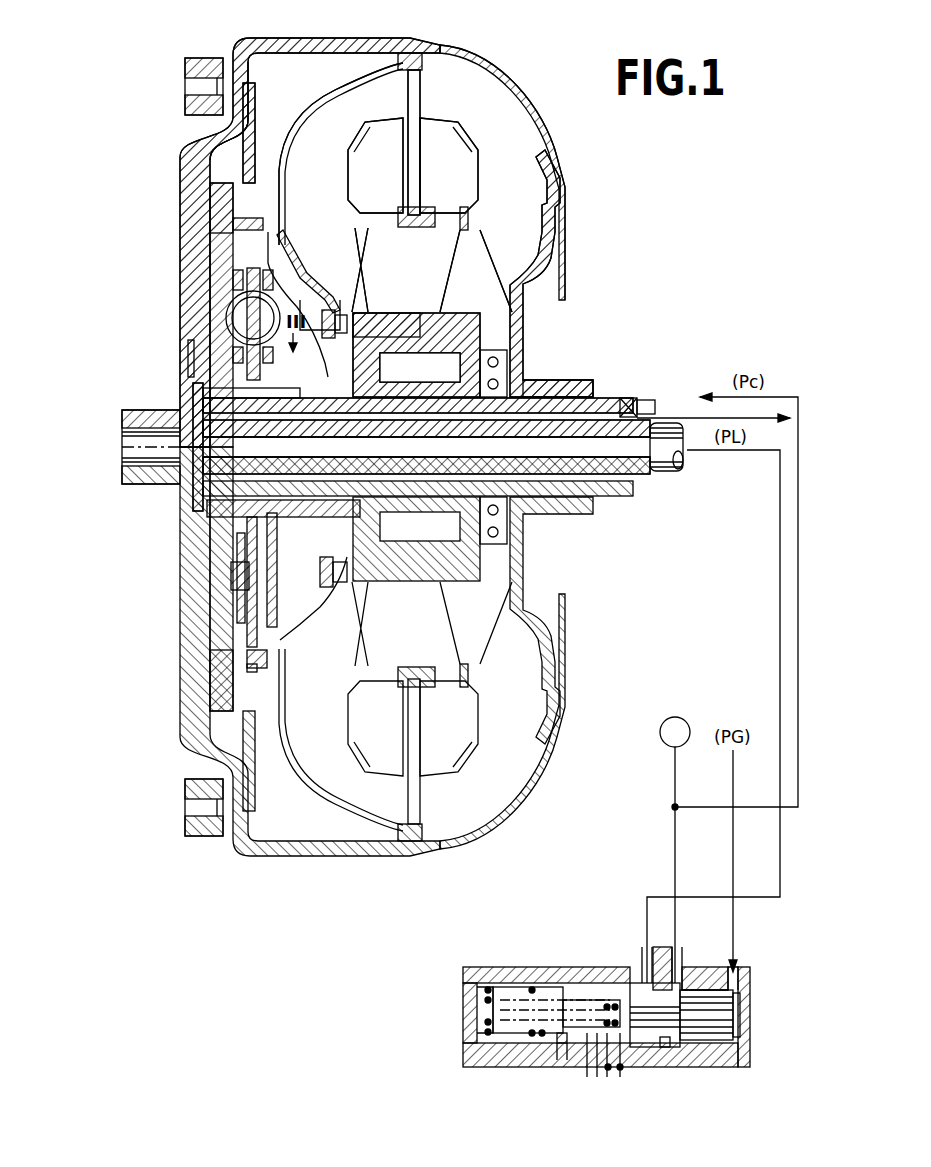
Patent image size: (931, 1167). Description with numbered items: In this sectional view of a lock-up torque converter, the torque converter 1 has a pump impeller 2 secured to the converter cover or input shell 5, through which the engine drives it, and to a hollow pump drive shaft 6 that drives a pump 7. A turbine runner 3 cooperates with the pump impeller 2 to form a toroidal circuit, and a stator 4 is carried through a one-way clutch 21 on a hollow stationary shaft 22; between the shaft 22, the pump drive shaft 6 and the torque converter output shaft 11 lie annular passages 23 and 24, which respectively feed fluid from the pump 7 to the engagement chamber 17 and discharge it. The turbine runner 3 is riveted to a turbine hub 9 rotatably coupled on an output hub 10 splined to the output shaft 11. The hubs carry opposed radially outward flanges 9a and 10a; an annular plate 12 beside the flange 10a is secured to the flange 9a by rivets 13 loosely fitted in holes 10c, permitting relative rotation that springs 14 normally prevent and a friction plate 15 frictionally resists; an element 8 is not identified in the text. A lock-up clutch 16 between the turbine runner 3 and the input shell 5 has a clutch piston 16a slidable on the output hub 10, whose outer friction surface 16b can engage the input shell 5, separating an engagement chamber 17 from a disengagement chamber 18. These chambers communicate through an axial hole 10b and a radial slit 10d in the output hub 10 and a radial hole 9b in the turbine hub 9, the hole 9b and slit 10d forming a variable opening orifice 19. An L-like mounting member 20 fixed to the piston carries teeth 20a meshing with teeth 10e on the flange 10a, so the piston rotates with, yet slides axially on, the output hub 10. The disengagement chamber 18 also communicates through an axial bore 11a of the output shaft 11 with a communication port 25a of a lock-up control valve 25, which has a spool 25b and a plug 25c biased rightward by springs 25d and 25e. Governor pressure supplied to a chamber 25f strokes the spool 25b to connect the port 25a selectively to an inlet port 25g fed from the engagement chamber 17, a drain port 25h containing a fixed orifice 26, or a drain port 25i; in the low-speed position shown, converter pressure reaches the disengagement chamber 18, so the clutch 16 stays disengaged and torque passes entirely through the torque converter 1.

The torque converter 1 is at (458, 48).
The pump impeller 2 is at (514, 186).
The turbine runner 3 is at (328, 186).
The stator 4 is at (420, 291).
The input shell 5 is at (233, 226).
The pump drive shaft 6 is at (558, 381).
The pump 7 is at (676, 717).
The armature hub 8 is at (365, 315).
The turbine hub 9 is at (346, 317).
The flange 9a is at (283, 268).
The radial hole 9b is at (318, 297).
The output hub 10 is at (227, 493).
The flange 10a is at (250, 253).
The axial hole 10b is at (203, 393).
The holes 10c is at (236, 588).
The radial slit 10d is at (190, 356).
The teeth 10e is at (255, 672).
The torque converter output shaft 11 is at (664, 470).
The axial bore 11a is at (623, 455).
The annular plate 12 is at (238, 548).
The rivets 13 is at (231, 574).
The springs 14 is at (228, 308).
The friction plate 15 is at (278, 530).
The lock-up clutch 16 is at (207, 181).
The clutch piston 16a is at (217, 197).
The outer friction surface 16b is at (248, 80).
The engagement chamber 17 is at (295, 100).
The disengagement chamber 18 is at (203, 163).
The variable opening orifice 19 is at (306, 322).
The mounting member 20 is at (227, 683).
The teeth 20a is at (262, 662).
The one-way clutch 21 is at (432, 362).
The stationary shaft 22 is at (628, 398).
The annular passage 23 is at (582, 392).
The annular passage 24 is at (642, 400).
The lock-up control valve 25 is at (696, 1080).
The communication port 25a is at (650, 965).
The spool 25b is at (717, 1012).
The plug 25c is at (552, 1040).
The spring 25d is at (493, 990).
The spring 25e is at (488, 986).
The chamber 25f is at (741, 1034).
The inlet port 25g is at (693, 977).
The drain port 25h is at (610, 1078).
The drain port 25i is at (590, 1075).
The fixed orifice 26 is at (622, 1070).